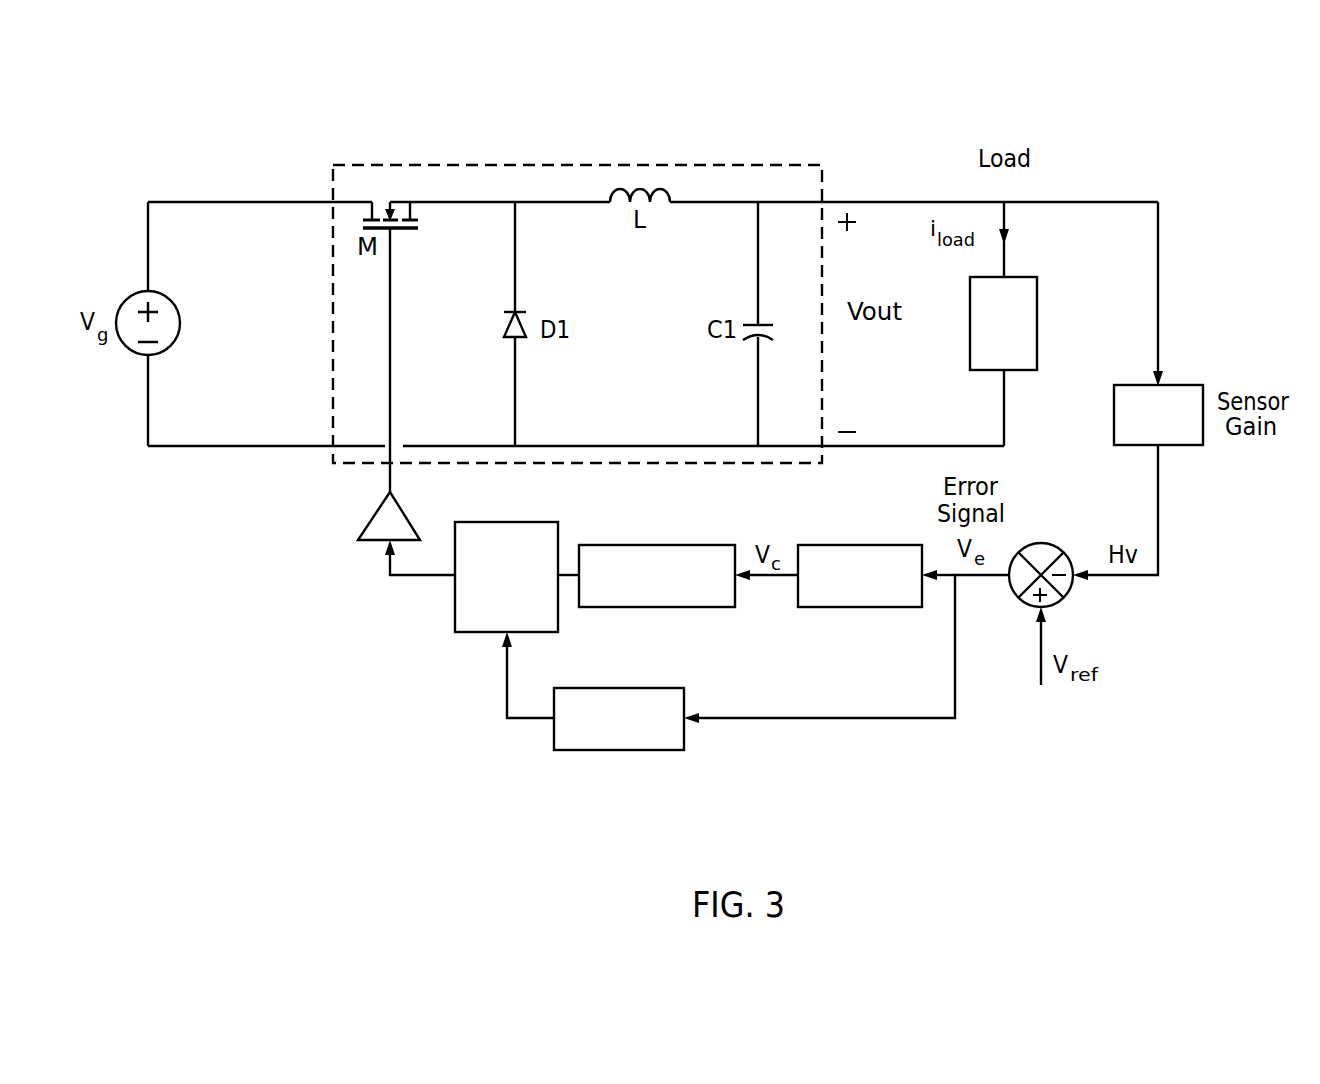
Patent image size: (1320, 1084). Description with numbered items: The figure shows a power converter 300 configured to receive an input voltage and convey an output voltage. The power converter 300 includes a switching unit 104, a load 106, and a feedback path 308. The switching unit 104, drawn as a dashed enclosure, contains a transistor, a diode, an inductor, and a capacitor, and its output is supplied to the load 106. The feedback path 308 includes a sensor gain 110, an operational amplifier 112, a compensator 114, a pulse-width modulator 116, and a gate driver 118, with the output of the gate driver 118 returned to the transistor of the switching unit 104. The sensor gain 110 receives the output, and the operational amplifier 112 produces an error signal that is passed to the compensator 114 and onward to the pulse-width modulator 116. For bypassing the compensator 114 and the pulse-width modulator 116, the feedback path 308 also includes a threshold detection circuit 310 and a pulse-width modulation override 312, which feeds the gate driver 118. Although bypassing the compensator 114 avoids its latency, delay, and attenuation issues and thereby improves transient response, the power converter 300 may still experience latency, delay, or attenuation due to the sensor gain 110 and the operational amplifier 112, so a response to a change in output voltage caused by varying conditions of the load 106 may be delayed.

The switching unit 104 is at (773, 165).
The load 106 is at (1020, 277).
The sensor gain 110 is at (1185, 385).
The operational amplifier 112 is at (1024, 606).
The compensator 114 is at (848, 545).
The pulse-width modulator 116 is at (660, 545).
The gate driver 118 is at (406, 517).
The power converter 300 is at (1228, 158).
The feedback path 308 is at (1173, 688).
The threshold detection circuit 310 is at (620, 688).
The pulse-width modulation override 312 is at (515, 522).